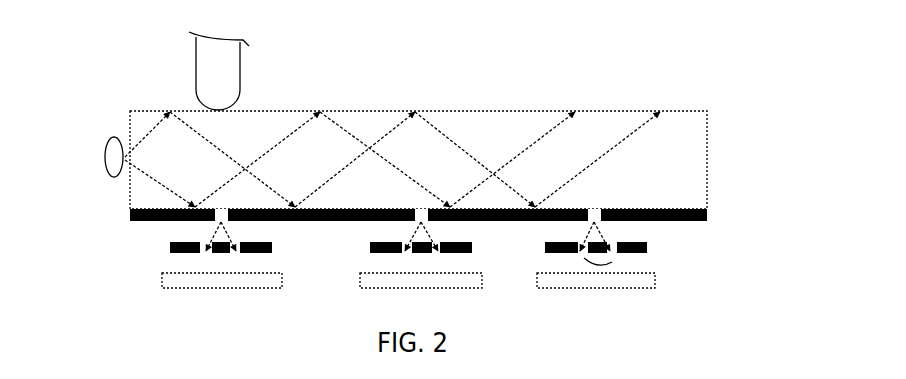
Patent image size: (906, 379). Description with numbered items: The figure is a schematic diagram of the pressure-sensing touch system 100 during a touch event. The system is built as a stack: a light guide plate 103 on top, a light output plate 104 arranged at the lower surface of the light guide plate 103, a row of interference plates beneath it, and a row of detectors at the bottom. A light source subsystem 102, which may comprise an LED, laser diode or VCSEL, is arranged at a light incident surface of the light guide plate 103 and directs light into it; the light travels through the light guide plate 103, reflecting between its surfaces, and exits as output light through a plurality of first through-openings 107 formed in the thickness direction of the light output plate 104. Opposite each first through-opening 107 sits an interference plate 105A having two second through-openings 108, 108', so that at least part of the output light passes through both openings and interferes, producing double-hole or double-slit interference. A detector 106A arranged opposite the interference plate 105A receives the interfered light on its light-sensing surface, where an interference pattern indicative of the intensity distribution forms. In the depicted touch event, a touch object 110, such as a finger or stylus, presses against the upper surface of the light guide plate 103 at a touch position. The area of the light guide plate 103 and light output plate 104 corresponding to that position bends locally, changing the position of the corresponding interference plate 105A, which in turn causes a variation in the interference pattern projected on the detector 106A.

The pressure-sensing touch system 100 is at (57, 125).
The light source subsystem 102 is at (104, 160).
The light guide plate 103 is at (129, 189).
The light output plate 104 is at (129, 215).
The interference plate 105A is at (170, 248).
The detector 106A is at (162, 280).
The first through-opening 107 is at (600, 207).
The second through-opening 108 is at (707, 243).
The second through-opening 108' is at (322, 236).
The touch object 110 is at (240, 58).